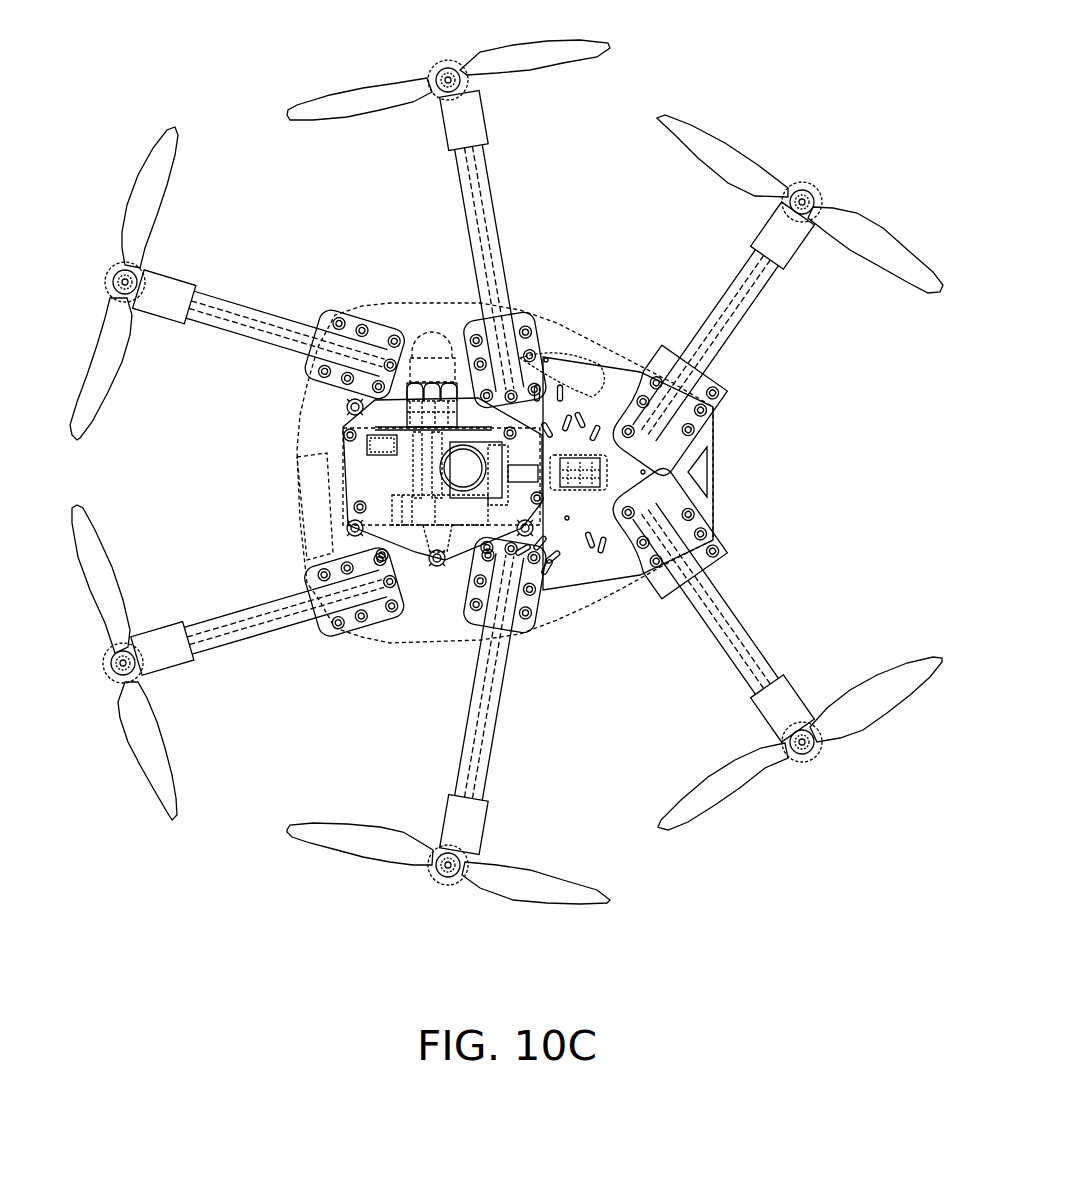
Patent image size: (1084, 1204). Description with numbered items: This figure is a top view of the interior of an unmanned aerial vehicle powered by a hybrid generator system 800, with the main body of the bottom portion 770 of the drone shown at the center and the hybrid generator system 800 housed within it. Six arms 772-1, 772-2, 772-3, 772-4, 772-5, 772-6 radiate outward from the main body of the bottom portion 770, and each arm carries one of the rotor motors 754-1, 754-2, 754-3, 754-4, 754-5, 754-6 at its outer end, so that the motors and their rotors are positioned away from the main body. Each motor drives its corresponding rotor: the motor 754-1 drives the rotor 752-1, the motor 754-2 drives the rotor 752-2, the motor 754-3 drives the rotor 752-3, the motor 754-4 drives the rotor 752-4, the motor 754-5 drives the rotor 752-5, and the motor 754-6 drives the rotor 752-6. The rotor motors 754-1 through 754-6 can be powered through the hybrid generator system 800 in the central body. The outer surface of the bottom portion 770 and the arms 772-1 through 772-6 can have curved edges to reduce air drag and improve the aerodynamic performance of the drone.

The bottom portion 770 is at (856, 845).
The hybrid generator system 800 is at (318, 442).
The arm 772-1 is at (730, 613).
The arm 772-2 is at (730, 335).
The arm 772-3 is at (487, 230).
The arm 772-4 is at (237, 307).
The arm 772-5 is at (250, 613).
The arm 772-6 is at (490, 698).
The motor 754-1 is at (817, 773).
The motor 754-2 is at (735, 158).
The motor 754-3 is at (363, 97).
The motor 754-4 is at (103, 272).
The motor 754-5 is at (103, 677).
The motor 754-6 is at (433, 877).
The rotor 752-1 is at (890, 693).
The rotor 752-2 is at (865, 227).
The rotor 752-3 is at (522, 48).
The rotor 752-4 is at (170, 127).
The rotor 752-5 is at (163, 753).
The rotor 752-6 is at (510, 860).